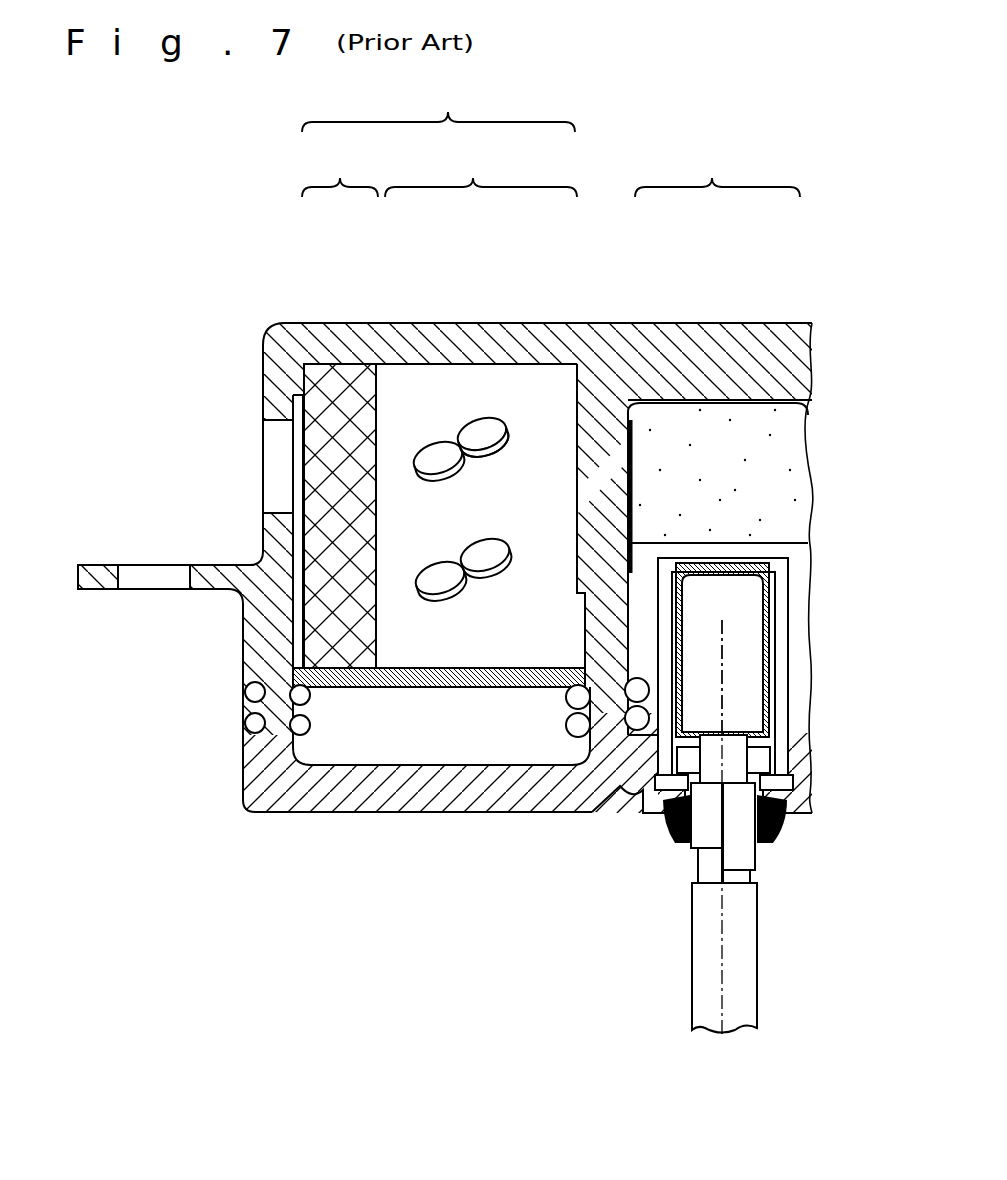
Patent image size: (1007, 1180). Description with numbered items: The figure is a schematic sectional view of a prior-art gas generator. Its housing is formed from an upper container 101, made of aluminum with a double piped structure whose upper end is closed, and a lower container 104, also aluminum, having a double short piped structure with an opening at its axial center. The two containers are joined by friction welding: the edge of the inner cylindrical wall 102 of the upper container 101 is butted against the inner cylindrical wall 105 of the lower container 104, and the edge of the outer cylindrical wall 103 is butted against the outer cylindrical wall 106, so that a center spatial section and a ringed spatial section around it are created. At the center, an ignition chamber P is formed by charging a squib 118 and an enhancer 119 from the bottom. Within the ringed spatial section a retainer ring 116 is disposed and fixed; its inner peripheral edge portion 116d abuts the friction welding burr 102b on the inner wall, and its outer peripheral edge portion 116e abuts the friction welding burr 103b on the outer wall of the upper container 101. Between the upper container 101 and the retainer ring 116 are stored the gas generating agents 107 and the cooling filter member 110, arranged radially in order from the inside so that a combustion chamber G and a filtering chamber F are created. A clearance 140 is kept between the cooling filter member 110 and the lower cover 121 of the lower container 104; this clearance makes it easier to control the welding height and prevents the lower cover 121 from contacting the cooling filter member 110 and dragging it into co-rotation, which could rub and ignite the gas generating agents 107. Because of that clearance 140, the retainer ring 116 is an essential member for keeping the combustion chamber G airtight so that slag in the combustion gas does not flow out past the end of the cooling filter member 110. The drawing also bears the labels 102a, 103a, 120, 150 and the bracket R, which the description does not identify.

The upper container 101 is at (262, 320).
The inner cylindrical wall 102 is at (655, 400).
The partition wall portion 102a is at (636, 477).
The friction welding burr 102b is at (578, 697).
The outer cylindrical wall 103 is at (263, 377).
The cover groove 103a is at (256, 459).
The friction welding burr 103b is at (300, 695).
The lower container 104 is at (242, 812).
The inner cylindrical wall 105 is at (577, 732).
The outer cylindrical wall 106 is at (265, 738).
The gas generating agents 107 is at (472, 428).
The cooling filter member 110 is at (350, 376).
The retainer ring 116 is at (418, 676).
The inner peripheral edge portion 116d is at (577, 668).
The outer peripheral edge portion 116e is at (293, 645).
The squib 118 is at (750, 635).
The enhancer 119 is at (773, 447).
The casing top wall 120 is at (385, 325).
The lower cover 121 is at (340, 790).
The clearance 140 is at (460, 738).
The terminal pin 150 is at (757, 843).
The region R is at (438, 105).
The filtering chamber F is at (340, 169).
The combustion chamber G is at (481, 169).
The ignition chamber P is at (717, 169).